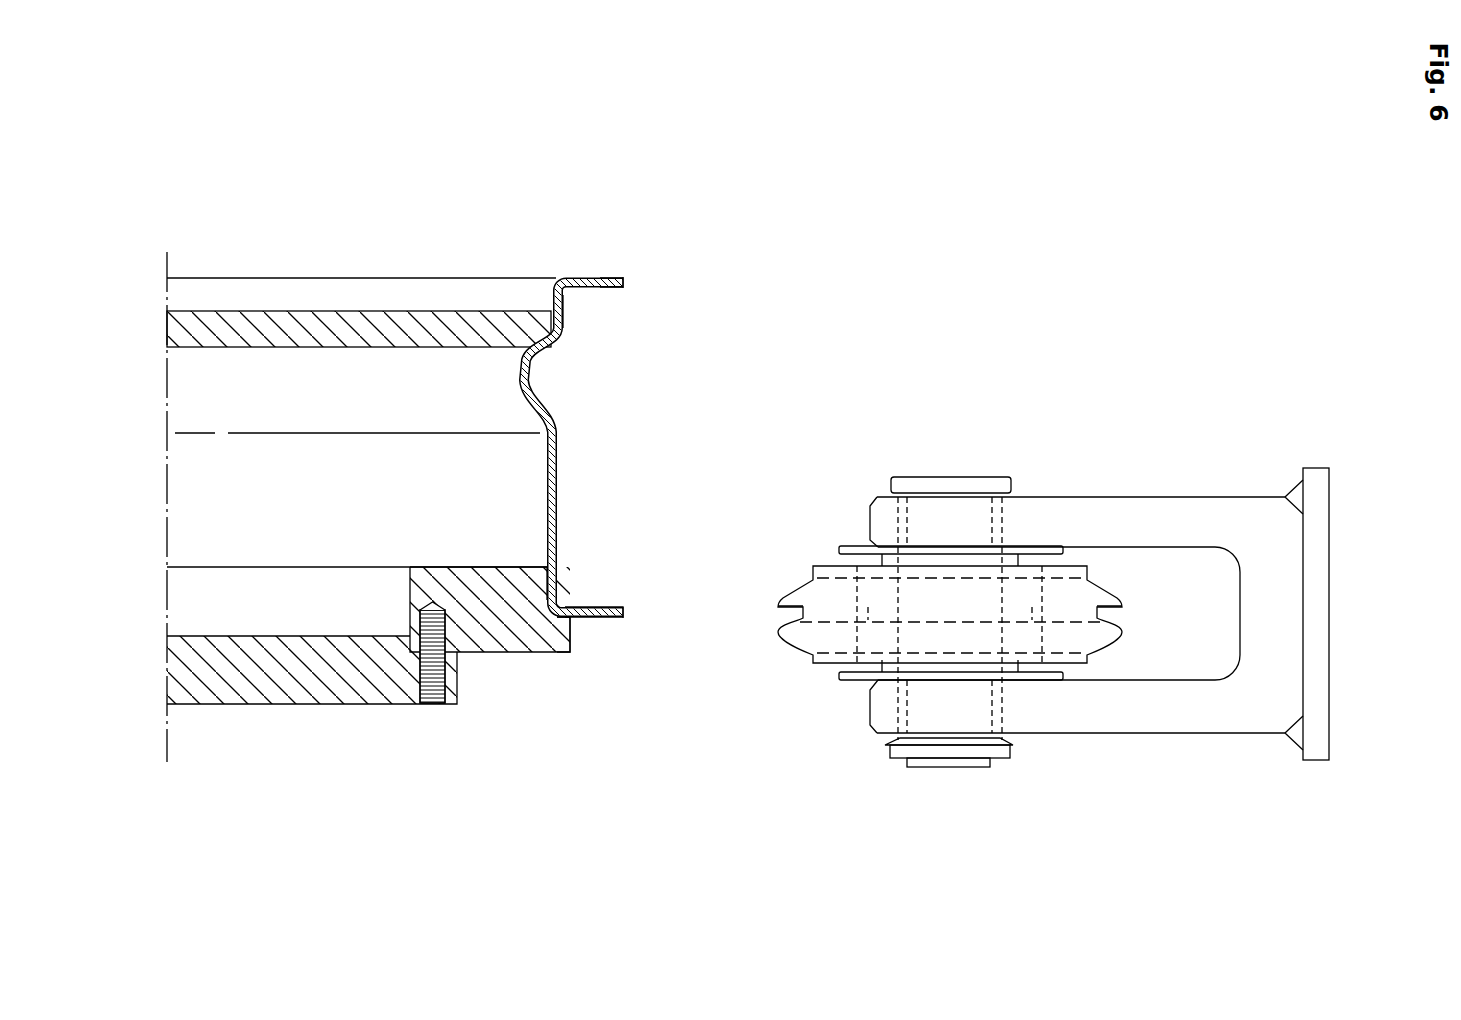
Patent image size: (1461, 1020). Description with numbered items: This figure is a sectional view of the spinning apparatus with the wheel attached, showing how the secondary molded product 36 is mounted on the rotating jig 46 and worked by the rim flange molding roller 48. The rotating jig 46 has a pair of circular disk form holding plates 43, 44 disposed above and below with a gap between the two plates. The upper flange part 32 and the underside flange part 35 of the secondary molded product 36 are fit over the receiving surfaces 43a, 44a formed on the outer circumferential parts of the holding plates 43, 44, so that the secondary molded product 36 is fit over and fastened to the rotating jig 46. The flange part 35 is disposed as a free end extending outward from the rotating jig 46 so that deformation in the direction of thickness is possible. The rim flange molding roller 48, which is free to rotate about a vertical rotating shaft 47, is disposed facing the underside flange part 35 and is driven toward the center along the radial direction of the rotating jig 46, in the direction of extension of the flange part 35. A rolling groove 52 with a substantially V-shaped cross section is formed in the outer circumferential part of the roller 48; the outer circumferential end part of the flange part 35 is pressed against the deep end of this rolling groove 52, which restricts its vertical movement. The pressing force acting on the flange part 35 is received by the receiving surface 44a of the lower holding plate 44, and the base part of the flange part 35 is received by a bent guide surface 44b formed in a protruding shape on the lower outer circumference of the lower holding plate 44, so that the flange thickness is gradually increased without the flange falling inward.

The upper flange part 32 is at (598, 289).
The underside flange part 35 is at (612, 620).
The secondary molded product 36 is at (602, 275).
The upper holding plate 43 is at (416, 312).
The receiving surface 43a is at (564, 322).
The lower holding plate 44 is at (497, 650).
The receiving surface 44a is at (554, 596).
The bent guide surface 44b is at (571, 627).
The rotating jig 46 is at (341, 277).
The rotating shaft 47 is at (971, 768).
The rim flange molding roller 48 is at (797, 653).
The rolling groove 52 is at (790, 623).